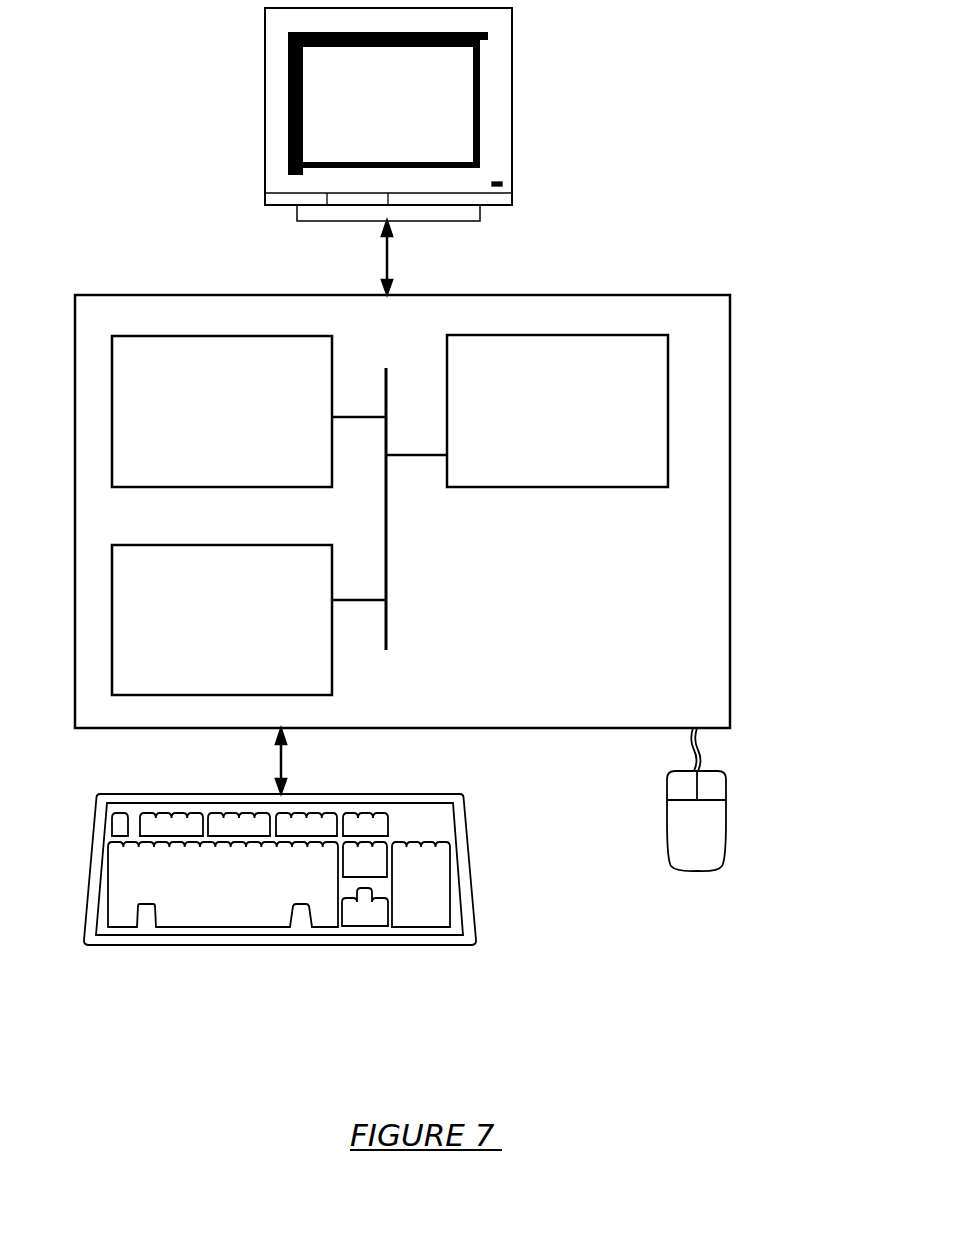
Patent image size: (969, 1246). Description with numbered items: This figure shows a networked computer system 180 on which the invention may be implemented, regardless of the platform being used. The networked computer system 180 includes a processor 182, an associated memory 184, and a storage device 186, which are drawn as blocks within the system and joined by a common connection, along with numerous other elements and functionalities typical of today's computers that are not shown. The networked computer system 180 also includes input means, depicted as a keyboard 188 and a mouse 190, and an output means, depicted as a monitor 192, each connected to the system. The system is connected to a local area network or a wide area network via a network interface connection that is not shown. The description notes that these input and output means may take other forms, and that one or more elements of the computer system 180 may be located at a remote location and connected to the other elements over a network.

The networked computer system 180 is at (748, 156).
The processor 182 is at (578, 422).
The memory 184 is at (244, 423).
The storage device 186 is at (240, 632).
The keyboard 188 is at (244, 893).
The mouse 190 is at (716, 844).
The monitor 192 is at (407, 119).